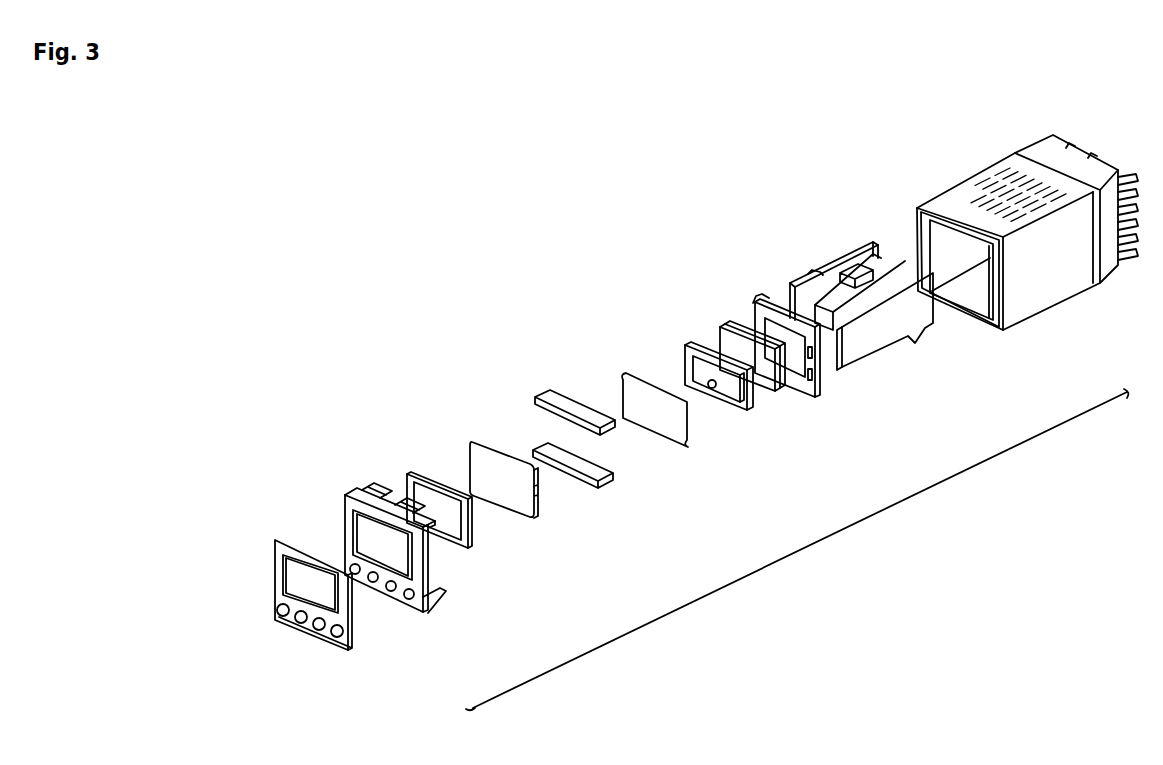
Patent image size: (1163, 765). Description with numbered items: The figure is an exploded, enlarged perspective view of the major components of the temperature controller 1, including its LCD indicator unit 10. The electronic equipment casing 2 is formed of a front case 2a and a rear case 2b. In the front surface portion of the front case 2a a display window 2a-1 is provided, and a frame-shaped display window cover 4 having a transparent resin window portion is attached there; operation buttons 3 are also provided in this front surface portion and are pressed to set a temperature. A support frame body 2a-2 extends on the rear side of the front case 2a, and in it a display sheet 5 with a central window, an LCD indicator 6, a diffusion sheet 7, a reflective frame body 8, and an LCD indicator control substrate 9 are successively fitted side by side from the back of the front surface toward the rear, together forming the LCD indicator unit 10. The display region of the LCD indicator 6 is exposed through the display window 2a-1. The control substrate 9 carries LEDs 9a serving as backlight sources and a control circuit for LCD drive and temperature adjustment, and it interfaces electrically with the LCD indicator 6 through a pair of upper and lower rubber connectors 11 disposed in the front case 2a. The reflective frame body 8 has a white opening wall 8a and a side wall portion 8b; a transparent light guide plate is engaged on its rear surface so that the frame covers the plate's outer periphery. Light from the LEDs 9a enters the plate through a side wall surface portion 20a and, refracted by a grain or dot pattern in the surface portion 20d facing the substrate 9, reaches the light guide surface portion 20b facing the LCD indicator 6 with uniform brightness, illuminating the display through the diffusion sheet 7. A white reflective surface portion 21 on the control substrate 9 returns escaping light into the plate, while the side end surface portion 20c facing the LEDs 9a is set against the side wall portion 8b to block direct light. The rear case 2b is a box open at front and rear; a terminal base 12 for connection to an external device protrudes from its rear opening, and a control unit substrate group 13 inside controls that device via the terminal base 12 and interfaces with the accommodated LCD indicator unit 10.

The temperature controller 1 is at (892, 178).
The electronic equipment casing 2 is at (800, 549).
The front case 2a is at (426, 619).
The display window 2a-1 is at (357, 531).
The support frame body 2a-2 is at (440, 600).
The rear case 2b is at (1050, 316).
The operation buttons 3 is at (356, 575).
The display window cover 4 is at (305, 640).
The display sheet 5 is at (466, 549).
The LCD indicator 6 is at (522, 517).
The diffusion sheet 7 is at (684, 446).
The reflective frame body 8 is at (748, 412).
The opening wall 8a is at (713, 390).
The side wall portion 8b is at (750, 412).
The LCD indicator control substrate 9 is at (776, 306).
The LEDs 9a is at (813, 357).
The LCD indicator unit 10 is at (621, 297).
The rubber connectors 11 is at (541, 393).
The terminal base 12 is at (1132, 275).
The control unit substrate group 13 is at (903, 362).
The side wall surface portion 20a is at (782, 394).
The light guide surface portion 20b is at (725, 342).
The side end surface portion 20c is at (752, 348).
The surface portion 20d is at (728, 327).
The white reflective surface portion 21 is at (758, 302).